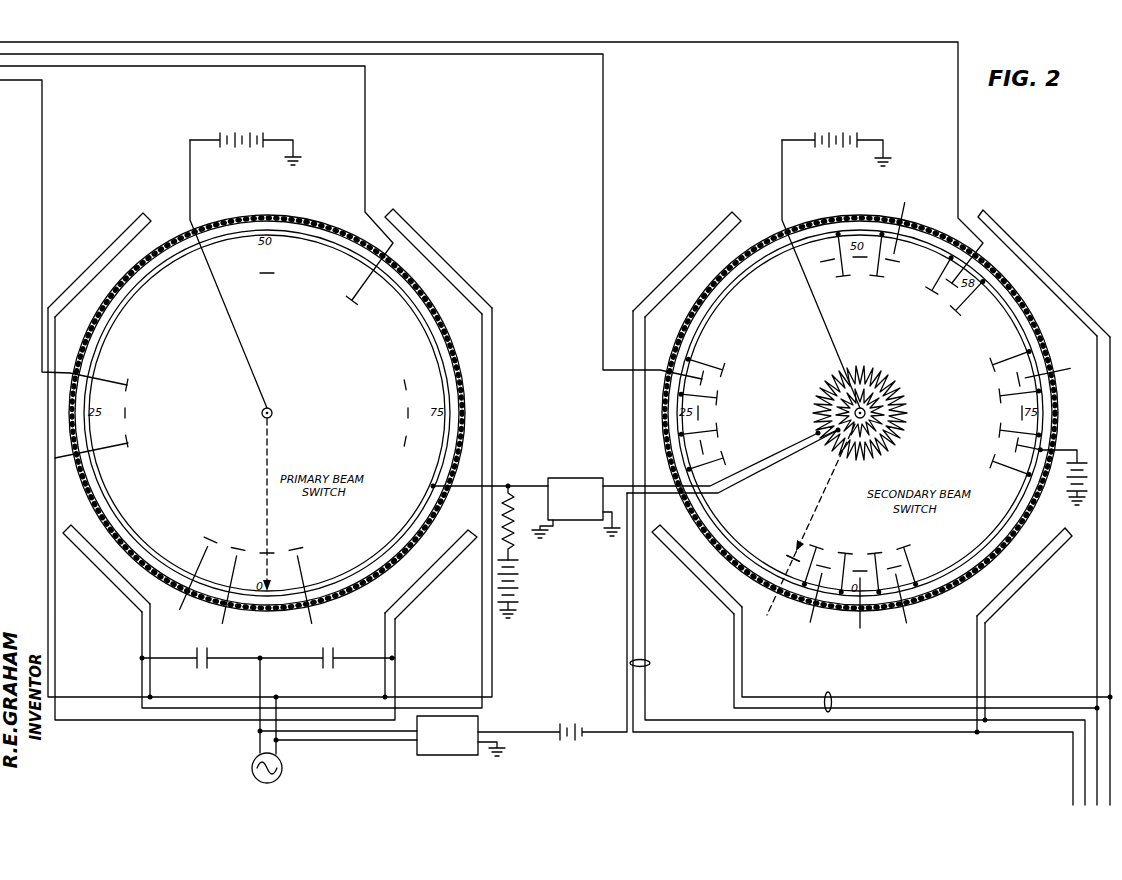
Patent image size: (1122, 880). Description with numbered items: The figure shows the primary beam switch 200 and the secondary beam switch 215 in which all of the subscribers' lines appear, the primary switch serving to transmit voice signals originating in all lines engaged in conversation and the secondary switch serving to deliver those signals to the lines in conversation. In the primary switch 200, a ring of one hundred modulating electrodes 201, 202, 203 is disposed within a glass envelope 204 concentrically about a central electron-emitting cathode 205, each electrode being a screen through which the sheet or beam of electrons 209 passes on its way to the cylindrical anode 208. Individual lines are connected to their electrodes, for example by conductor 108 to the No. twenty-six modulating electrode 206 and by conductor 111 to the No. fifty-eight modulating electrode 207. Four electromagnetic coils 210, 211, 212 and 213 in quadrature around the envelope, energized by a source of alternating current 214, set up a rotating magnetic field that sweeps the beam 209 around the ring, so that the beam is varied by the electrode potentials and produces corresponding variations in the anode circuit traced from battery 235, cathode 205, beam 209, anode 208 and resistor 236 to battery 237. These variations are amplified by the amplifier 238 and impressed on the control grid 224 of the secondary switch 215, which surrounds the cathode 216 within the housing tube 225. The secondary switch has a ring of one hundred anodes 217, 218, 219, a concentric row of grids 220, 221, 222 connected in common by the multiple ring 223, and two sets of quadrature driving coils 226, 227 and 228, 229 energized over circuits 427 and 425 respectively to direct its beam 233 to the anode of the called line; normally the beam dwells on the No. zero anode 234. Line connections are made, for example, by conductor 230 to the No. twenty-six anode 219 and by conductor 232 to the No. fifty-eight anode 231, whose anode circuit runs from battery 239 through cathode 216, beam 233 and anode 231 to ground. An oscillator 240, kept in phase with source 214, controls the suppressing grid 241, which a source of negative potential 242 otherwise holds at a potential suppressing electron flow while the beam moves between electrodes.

The conductor 108 is at (42, 120).
The conductor 111 is at (365, 97).
The primary beam switch 200 is at (238, 274).
The modulating electrode 201 is at (294, 549).
The modulating electrode 202 is at (237, 548).
The modulating electrode 203 is at (208, 538).
The glass envelope 204 is at (83, 495).
The cathode 205 is at (274, 413).
The modulating electrode 206 is at (133, 385).
The modulating electrode 207 is at (352, 307).
The anode 208 is at (113, 302).
The electron beam 209 is at (270, 466).
The electromagnetic coil 210 is at (438, 565).
The electromagnetic coil 211 is at (123, 230).
The electromagnetic coil 212 is at (117, 590).
The electromagnetic coil 213 is at (420, 250).
The source of alternating current 214 is at (281, 762).
The secondary beam switch 215 is at (829, 274).
The cathode 216 is at (875, 392).
The anode 217 is at (708, 447).
The anode 218 is at (703, 413).
The anode 219 is at (708, 381).
The grid 220 is at (729, 458).
The grid 221 is at (722, 430).
The grid 222 is at (722, 399).
The multiple ring 223 is at (722, 531).
The control grid 224 is at (902, 401).
The housing tube 225 is at (675, 498).
The driving coil 226 is at (1012, 585).
The driving coil 227 is at (706, 236).
The driving coil 228 is at (706, 586).
The driving coil 229 is at (1007, 244).
The conductor 230 is at (603, 97).
The anode 231 is at (951, 289).
The conductor 232 is at (958, 80).
The electron beam 233 is at (818, 503).
The anode 234 is at (860, 568).
The battery 235 is at (243, 133).
The resistor 236 is at (512, 520).
The battery 237 is at (517, 591).
The amplifier 238 is at (582, 478).
The battery 239 is at (835, 134).
The oscillator 240 is at (432, 755).
The suppressing grid 241 is at (892, 415).
The source of negative potential 242 is at (566, 725).
The circuit 425 is at (828, 692).
The circuit 427 is at (650, 663).